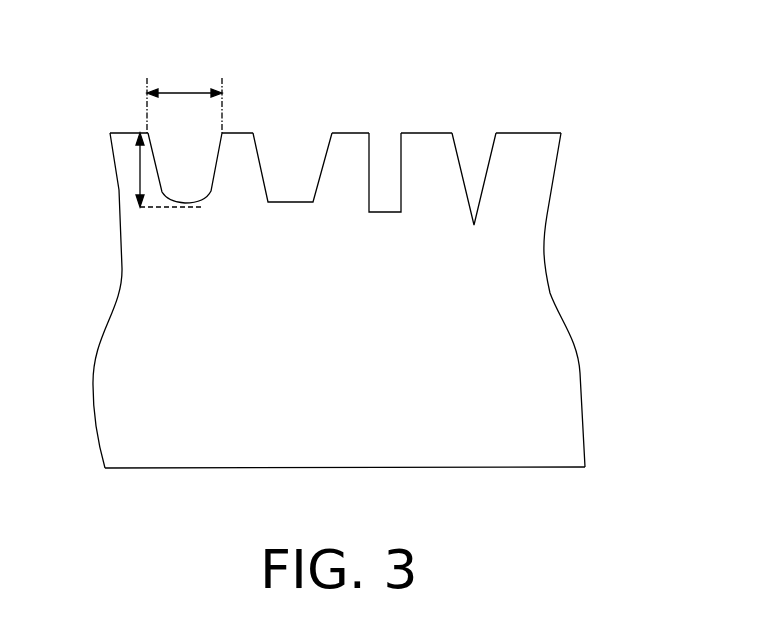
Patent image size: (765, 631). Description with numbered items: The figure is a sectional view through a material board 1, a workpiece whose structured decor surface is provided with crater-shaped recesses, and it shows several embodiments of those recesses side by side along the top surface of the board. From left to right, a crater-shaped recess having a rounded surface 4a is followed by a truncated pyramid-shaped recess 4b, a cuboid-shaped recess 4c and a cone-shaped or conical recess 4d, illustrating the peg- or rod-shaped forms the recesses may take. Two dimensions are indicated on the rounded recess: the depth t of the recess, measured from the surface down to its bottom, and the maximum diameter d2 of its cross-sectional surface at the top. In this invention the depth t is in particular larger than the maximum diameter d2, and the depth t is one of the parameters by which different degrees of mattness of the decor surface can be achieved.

The material board 1 is at (634, 232).
The crater-shaped recess having a rounded surface 4a is at (177, 205).
The truncated pyramid-shaped recess 4b is at (280, 195).
The cuboid-shaped recess 4c is at (382, 190).
The cone-shaped or conical recess 4d is at (478, 185).
The maximum diameter of the cross-sectional surface d2 is at (178, 92).
The depth of the recesses t is at (140, 158).